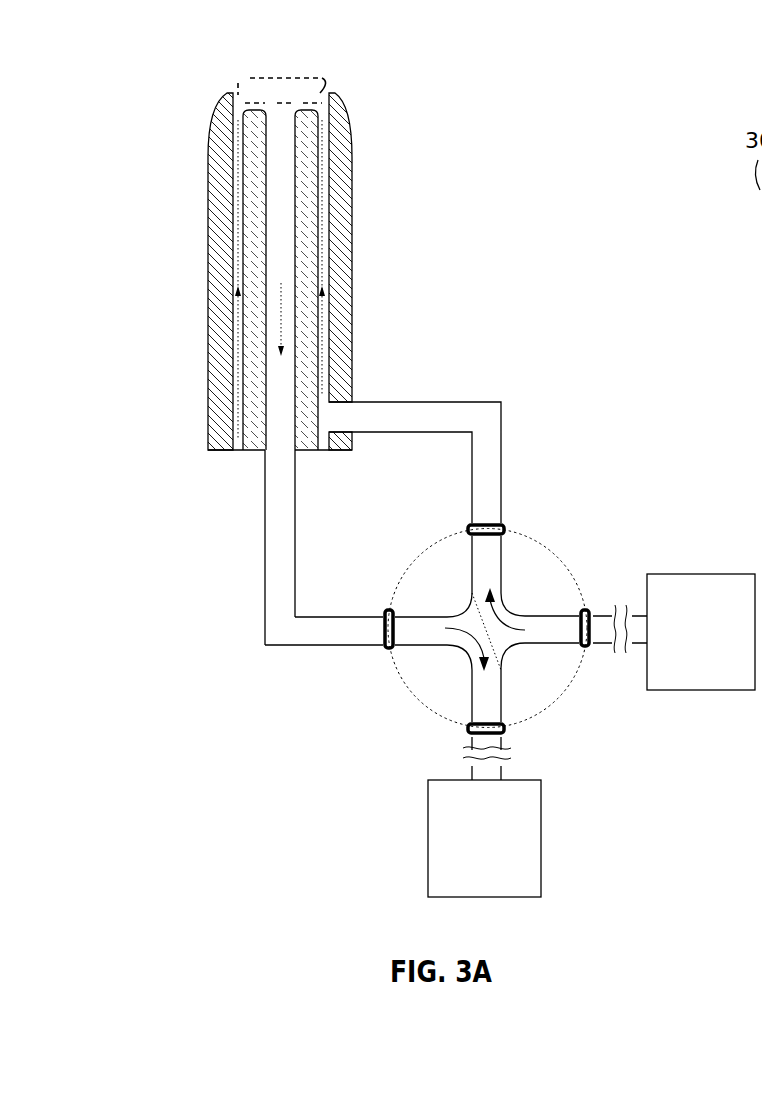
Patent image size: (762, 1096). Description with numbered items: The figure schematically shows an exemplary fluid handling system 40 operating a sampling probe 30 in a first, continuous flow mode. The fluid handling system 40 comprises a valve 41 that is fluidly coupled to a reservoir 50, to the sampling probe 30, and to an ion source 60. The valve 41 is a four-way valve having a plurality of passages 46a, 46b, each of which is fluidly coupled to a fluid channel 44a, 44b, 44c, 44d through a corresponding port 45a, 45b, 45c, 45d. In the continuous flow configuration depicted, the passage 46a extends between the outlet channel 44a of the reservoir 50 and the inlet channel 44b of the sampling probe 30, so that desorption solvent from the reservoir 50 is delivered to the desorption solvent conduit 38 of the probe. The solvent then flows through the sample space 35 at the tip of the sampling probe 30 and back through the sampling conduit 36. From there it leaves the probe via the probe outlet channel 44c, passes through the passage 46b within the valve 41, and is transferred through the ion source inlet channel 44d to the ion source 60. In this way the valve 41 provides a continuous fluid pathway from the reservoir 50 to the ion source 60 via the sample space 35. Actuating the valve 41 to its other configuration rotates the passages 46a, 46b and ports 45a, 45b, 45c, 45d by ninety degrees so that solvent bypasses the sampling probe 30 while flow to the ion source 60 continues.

The sampling probe 30 is at (300, 356).
The sample space 35 is at (320, 92).
The sampling conduit 36 is at (280, 257).
The desorption solvent conduit 38 is at (320, 372).
The fluid handling system 40 is at (471, 546).
The valve 41 is at (605, 645).
The outlet channel of the reservoir 44a is at (527, 692).
The inlet channel of the sampling probe 44b is at (442, 402).
The probe outlet channel 44c is at (318, 647).
The ion source inlet channel 44d is at (470, 740).
The port 45a is at (588, 608).
The port 45b is at (506, 529).
The port 45c is at (388, 652).
The port 45d is at (506, 731).
The passage 46a is at (472, 558).
The passage 46b is at (422, 615).
The reservoir 50 is at (701, 632).
The ion source 60 is at (484, 838).